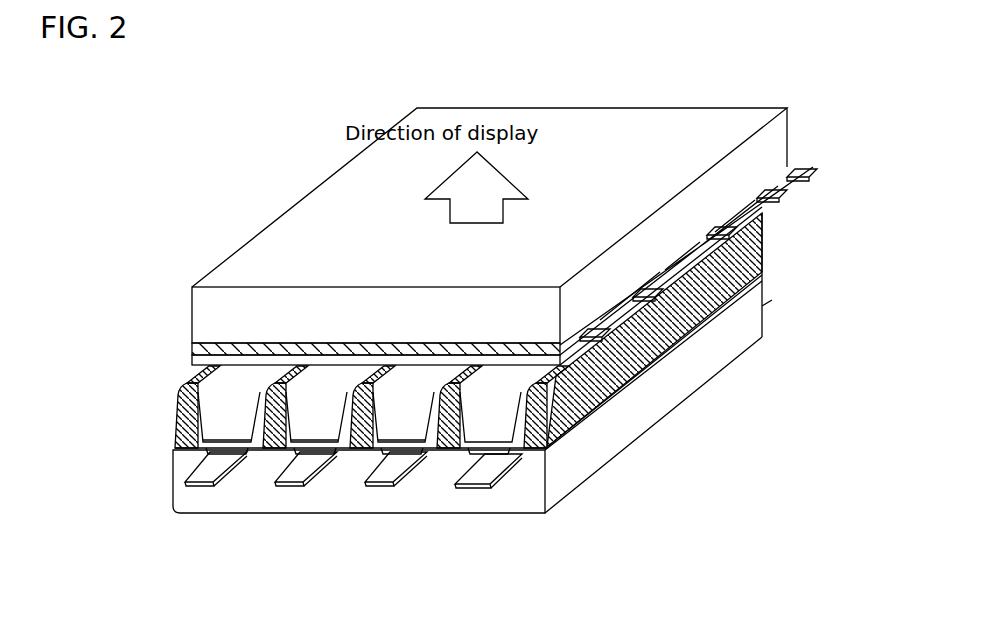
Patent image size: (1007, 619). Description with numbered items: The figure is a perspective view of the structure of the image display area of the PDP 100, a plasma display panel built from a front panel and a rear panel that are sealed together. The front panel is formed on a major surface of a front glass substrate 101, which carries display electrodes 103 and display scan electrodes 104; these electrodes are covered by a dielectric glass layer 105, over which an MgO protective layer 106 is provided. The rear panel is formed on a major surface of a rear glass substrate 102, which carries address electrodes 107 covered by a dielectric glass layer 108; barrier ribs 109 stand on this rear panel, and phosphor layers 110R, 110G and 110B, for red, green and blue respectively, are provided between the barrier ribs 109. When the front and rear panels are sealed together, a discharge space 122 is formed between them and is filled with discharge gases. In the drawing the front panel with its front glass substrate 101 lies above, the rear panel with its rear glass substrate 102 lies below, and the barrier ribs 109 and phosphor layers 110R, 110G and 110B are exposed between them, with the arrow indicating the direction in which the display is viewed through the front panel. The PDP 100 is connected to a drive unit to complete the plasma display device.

The PDP 100 is at (772, 300).
The front glass substrate 101 is at (197, 299).
The rear glass substrate 102 is at (430, 508).
The display electrodes 103 is at (730, 222).
The display scan electrodes 104 is at (667, 267).
The dielectric glass layer 105 is at (193, 348).
The MgO protective layer 106 is at (193, 362).
The address electrodes 107 is at (214, 476).
The dielectric glass layer 108 is at (186, 450).
The barrier ribs 109 is at (440, 408).
The phosphor layer 110R is at (176, 481).
The phosphor layer 110G is at (312, 440).
The phosphor layer 110B is at (413, 440).
The discharge space 122 is at (503, 378).